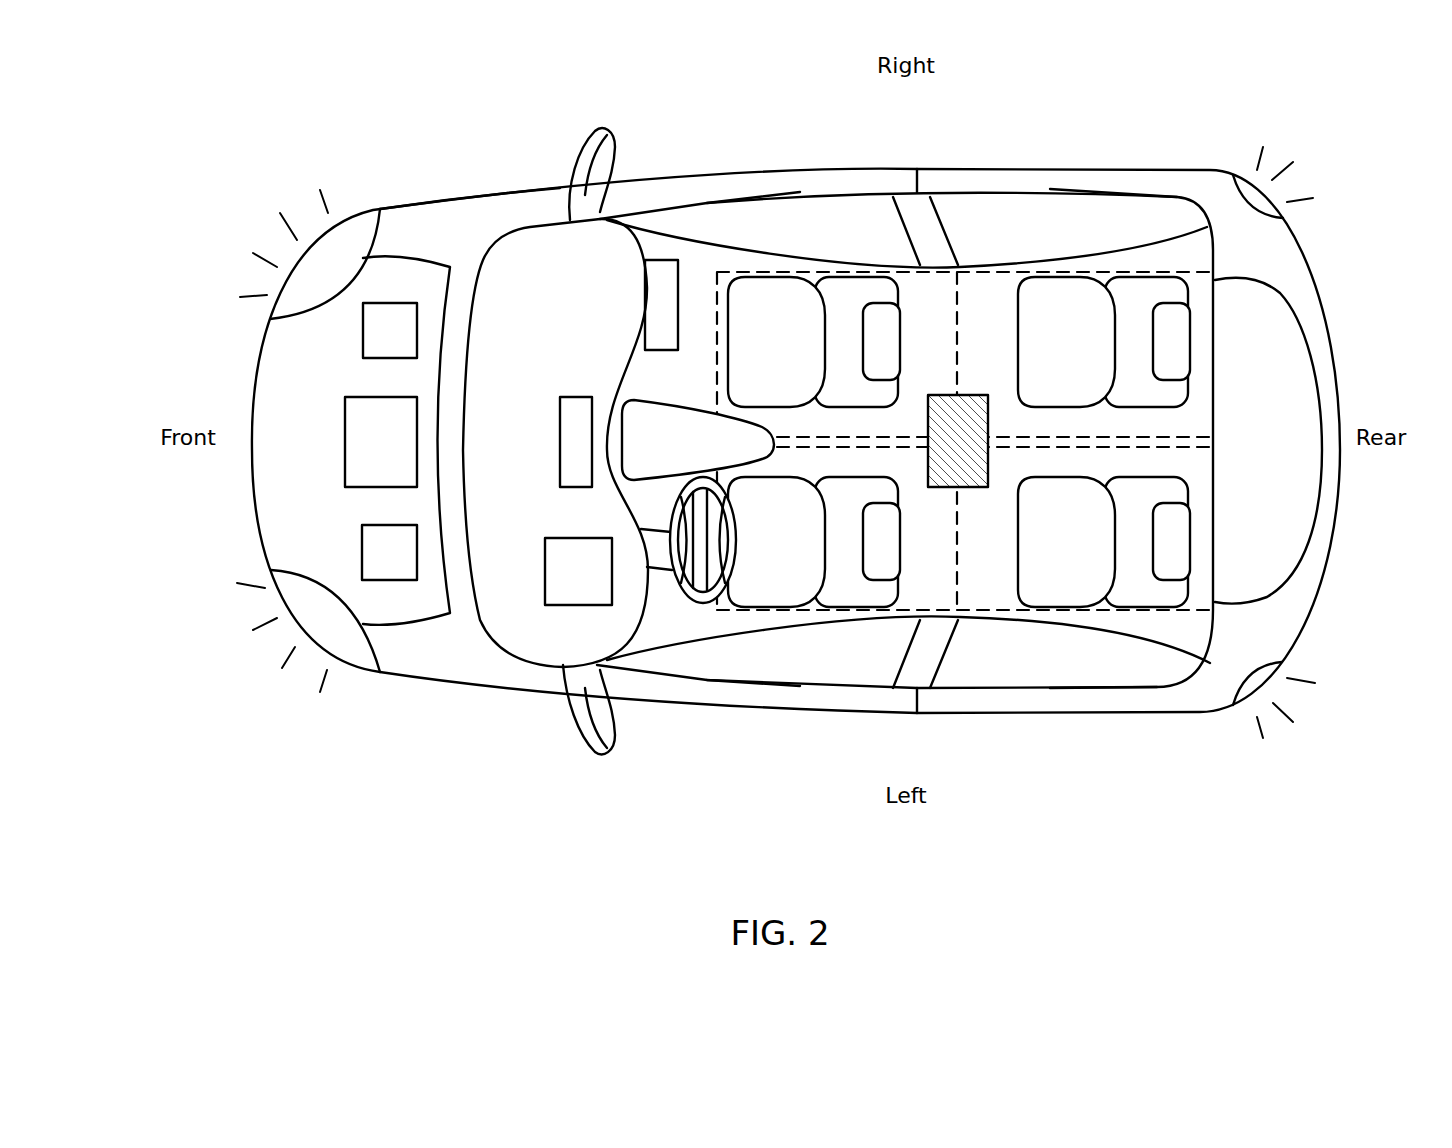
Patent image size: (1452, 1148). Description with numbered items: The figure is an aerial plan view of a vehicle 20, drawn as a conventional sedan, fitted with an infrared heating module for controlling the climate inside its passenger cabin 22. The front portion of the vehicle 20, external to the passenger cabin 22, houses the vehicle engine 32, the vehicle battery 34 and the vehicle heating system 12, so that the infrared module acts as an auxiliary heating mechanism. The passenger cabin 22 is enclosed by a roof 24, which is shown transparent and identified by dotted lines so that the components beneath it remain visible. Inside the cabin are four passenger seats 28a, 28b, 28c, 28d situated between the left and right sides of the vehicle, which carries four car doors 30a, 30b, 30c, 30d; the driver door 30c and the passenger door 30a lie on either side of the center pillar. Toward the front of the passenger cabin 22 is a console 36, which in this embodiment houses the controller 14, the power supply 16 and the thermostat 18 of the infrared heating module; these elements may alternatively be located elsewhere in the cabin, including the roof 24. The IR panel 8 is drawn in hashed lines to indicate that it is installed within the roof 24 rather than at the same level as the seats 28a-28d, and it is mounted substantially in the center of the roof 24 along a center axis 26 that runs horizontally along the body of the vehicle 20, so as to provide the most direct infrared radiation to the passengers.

The IR panel 8 is at (950, 395).
The vehicle heating system 12 is at (381, 442).
The controller 14 is at (580, 397).
The power supply 16 is at (578, 571).
The thermostat 18 is at (662, 270).
The vehicle 20 is at (430, 775).
The passenger cabin 22 is at (487, 242).
The roof 24 is at (1175, 268).
The center axis 26 is at (1193, 447).
The passenger seat 28a is at (814, 342).
The passenger seat 28b is at (1104, 342).
The passenger seat 28c is at (814, 542).
The passenger seat 28d is at (1104, 542).
The passenger door 30a is at (790, 220).
The car door 30b is at (1030, 218).
The driver door 30c is at (790, 677).
The car door 30d is at (1027, 677).
The engine 32 is at (390, 330).
The battery 34 is at (389, 552).
The console 36 is at (523, 267).